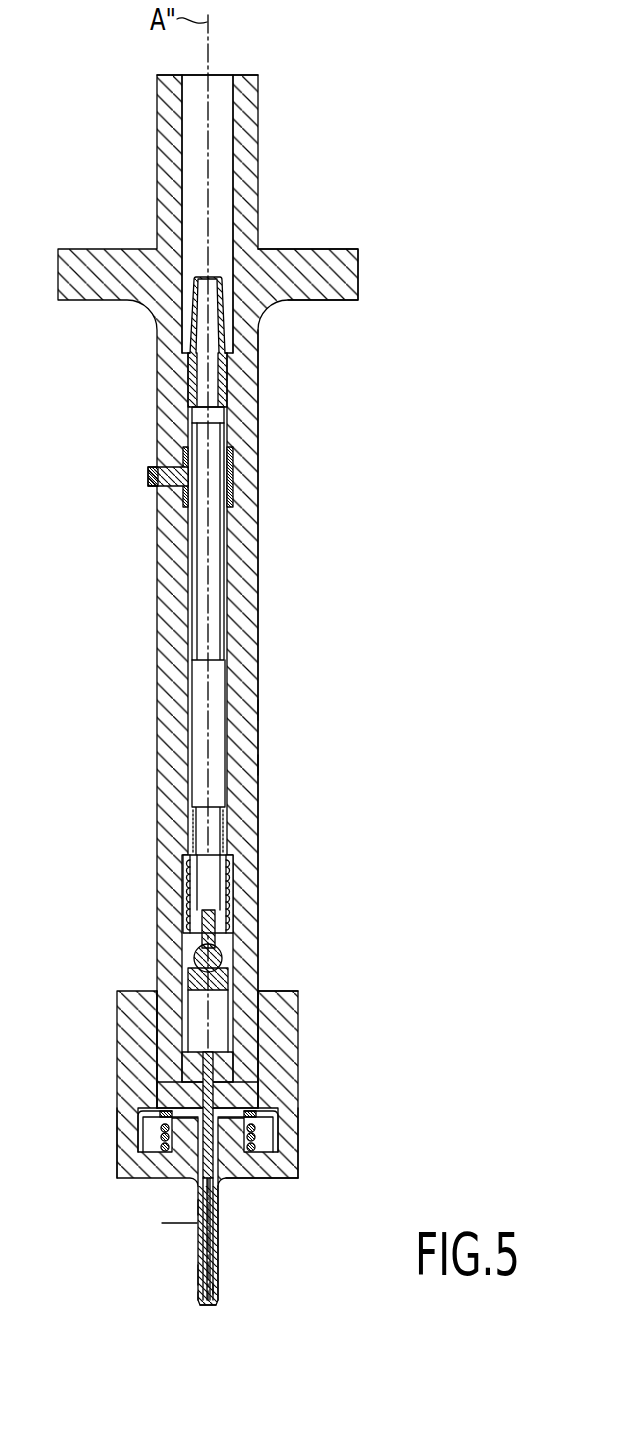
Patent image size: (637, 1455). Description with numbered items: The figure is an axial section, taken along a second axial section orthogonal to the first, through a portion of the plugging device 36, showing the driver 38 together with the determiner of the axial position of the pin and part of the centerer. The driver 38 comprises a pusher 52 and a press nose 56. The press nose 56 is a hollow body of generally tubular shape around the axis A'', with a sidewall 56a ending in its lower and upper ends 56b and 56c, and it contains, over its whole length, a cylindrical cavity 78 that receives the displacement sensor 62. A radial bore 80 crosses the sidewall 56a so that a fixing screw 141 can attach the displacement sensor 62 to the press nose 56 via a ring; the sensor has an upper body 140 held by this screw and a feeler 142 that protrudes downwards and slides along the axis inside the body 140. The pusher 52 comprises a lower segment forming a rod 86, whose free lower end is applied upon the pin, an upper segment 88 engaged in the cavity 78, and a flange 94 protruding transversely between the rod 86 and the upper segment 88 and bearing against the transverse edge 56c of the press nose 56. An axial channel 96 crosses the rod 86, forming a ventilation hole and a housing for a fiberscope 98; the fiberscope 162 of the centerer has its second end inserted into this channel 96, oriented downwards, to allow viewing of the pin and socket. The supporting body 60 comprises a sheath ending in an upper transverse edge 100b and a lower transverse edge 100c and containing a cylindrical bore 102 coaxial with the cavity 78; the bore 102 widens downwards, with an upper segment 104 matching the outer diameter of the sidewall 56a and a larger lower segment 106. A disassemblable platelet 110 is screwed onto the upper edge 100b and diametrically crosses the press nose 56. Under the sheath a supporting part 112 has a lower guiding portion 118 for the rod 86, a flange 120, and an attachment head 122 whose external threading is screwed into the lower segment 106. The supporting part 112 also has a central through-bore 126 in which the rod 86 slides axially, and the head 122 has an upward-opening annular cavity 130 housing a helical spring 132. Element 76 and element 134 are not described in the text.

The plugging device 36 is at (342, 763).
The driver 38 is at (277, 710).
The pusher 52 is at (219, 1258).
The press nose 56 is at (262, 400).
The sidewall 56a is at (242, 787).
The lower end 56b is at (245, 73).
The upper end 56c is at (258, 1103).
The supporting body 60 is at (298, 1072).
The displacement sensor 62 is at (208, 275).
The flange 76 is at (343, 249).
The cavity 78 is at (218, 163).
The radial bore 80 is at (163, 487).
The rod 86 is at (215, 1296).
The upper segment 88 is at (227, 1063).
The flange 94 is at (278, 1130).
The axial channel 96 is at (210, 1236).
The fiberscope 98 is at (198, 1240).
The upper transverse edge 100b is at (278, 992).
The lower transverse edge 100c is at (275, 1177).
The cylindrical bore 102 is at (168, 1005).
The upper segment 104 is at (157, 1053).
The lower segment 106 is at (160, 1134).
The platelet 110 is at (228, 963).
The supporting part 112 is at (298, 1177).
The lower portion 118 is at (198, 1275).
The flange 120 is at (125, 1170).
The head 122 is at (172, 1112).
The central through-bore 126 is at (215, 1287).
The annular cavity 130 is at (270, 1145).
The helical spring 132 is at (163, 1147).
The sleeve upper portion 134 is at (197, 1210).
The upper body 140 is at (215, 455).
The fixing screw 141 is at (150, 467).
The feeler 142 is at (215, 946).
The fiberscope 162 is at (198, 1295).